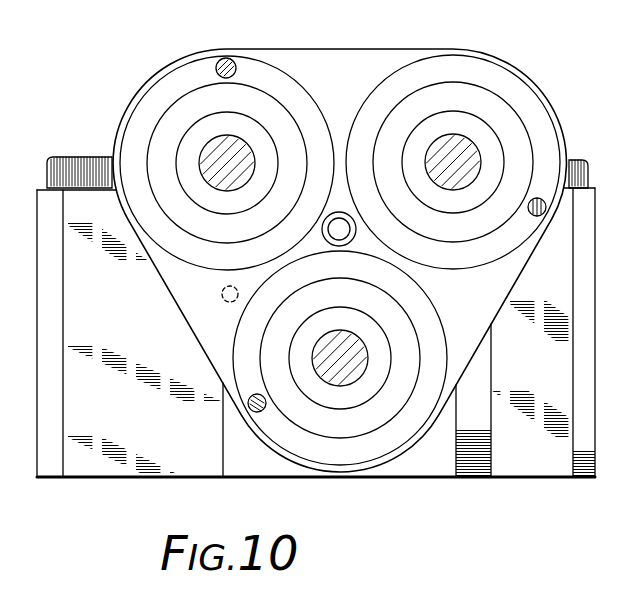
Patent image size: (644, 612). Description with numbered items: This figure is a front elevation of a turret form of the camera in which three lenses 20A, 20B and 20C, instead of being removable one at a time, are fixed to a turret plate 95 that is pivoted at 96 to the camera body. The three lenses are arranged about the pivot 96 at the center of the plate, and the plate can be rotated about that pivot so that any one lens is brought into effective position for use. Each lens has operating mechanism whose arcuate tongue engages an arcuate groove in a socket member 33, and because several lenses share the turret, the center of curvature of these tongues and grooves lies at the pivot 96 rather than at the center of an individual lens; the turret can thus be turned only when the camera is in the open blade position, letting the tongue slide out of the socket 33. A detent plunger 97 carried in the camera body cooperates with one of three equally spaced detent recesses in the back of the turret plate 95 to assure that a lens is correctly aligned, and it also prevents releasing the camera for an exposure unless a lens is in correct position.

The turret plate 95 is at (340, 55).
The lens 20A is at (427, 327).
The lens 20B is at (288, 97).
The lens 20C is at (538, 108).
The socket member 33 is at (232, 58).
The pivot 96 is at (347, 226).
The detent plunger 97 is at (221, 291).